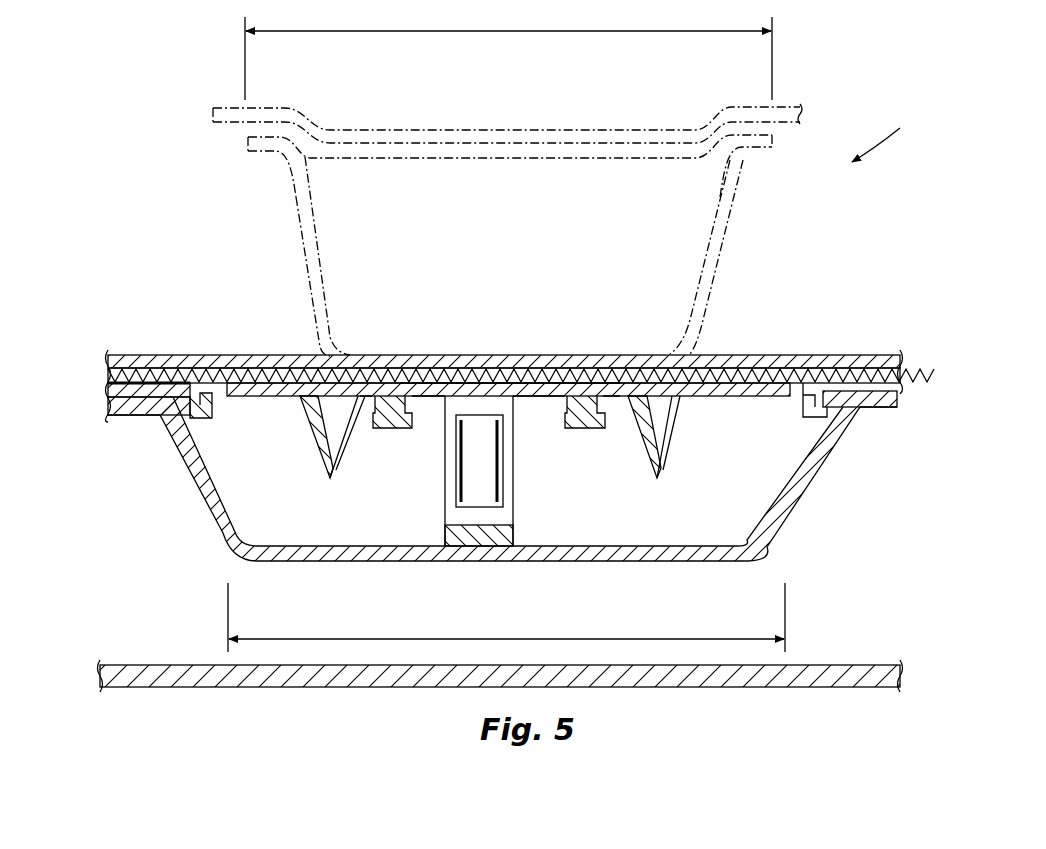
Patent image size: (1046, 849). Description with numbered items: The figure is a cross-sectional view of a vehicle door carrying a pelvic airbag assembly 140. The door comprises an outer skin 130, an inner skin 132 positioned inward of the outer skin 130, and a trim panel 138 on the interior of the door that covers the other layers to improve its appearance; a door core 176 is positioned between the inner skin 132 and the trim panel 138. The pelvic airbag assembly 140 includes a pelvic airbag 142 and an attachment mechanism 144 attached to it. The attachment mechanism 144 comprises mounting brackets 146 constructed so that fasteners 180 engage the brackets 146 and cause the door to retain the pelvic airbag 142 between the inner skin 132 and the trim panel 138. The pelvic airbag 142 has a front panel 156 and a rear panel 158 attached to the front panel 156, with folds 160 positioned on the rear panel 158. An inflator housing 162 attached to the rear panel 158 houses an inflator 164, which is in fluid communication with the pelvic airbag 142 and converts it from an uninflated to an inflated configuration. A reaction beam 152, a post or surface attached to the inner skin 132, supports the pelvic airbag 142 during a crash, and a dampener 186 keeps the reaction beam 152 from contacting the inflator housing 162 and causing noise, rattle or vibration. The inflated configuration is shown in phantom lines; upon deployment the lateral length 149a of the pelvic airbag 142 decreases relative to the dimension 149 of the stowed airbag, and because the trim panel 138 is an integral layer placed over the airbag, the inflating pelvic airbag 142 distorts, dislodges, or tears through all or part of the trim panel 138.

The outer skin 130 is at (790, 690).
The inner skin 132 is at (100, 396).
The trim panel 138 is at (430, 135).
The pelvic airbag assembly 140 is at (473, 472).
The pelvic airbag 142 is at (632, 150).
The attachment mechanism 144 is at (367, 423).
The mounting brackets 146 is at (428, 412).
The lower width dimension 149 is at (595, 639).
The lateral length 149a is at (400, 31).
The reaction beam 152 is at (793, 514).
The front panel 156 is at (623, 375).
The rear panel 158 is at (717, 396).
The folds 160 is at (302, 257).
The inflator housing 162 is at (440, 522).
The inflator 164 is at (505, 482).
The door core 176 is at (105, 377).
The fasteners 180 is at (396, 430).
The dampener 186 is at (483, 536).